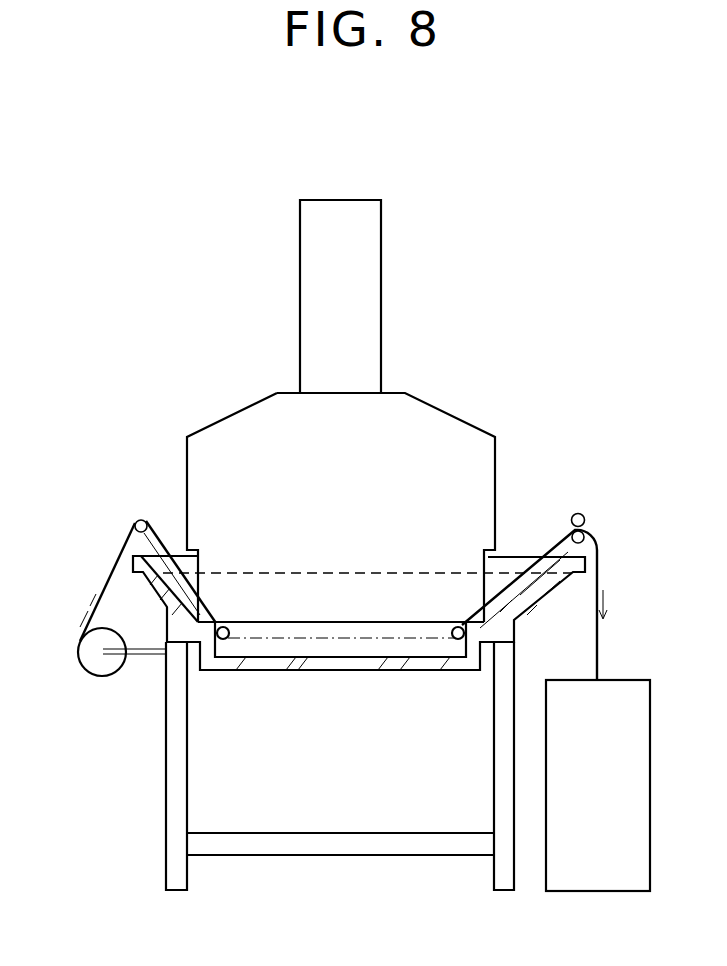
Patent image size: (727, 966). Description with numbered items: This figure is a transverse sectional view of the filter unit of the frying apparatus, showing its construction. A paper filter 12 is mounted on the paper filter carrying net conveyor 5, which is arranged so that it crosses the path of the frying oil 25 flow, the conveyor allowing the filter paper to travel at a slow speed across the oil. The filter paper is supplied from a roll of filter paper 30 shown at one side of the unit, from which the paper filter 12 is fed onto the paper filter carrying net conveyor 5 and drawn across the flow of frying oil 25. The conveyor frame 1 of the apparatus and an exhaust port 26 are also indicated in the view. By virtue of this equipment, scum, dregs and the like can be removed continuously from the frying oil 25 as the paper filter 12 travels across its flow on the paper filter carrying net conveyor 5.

The conveyor frame 1 is at (452, 409).
The paper filter carrying net conveyor 5 is at (245, 640).
The paper filter 12 is at (111, 571).
The frying oil 25 is at (348, 590).
The exhaust port 26 is at (347, 199).
The roll of filter paper 30 is at (92, 662).